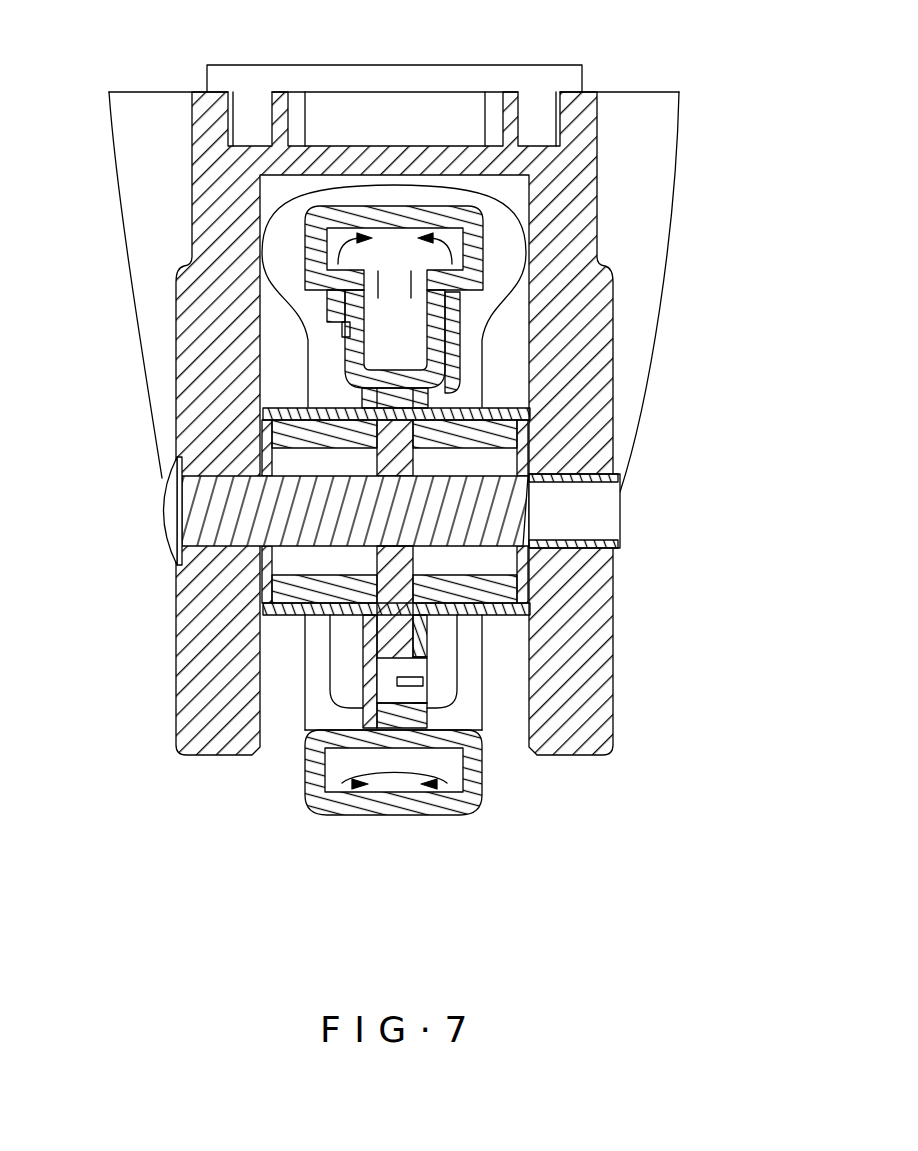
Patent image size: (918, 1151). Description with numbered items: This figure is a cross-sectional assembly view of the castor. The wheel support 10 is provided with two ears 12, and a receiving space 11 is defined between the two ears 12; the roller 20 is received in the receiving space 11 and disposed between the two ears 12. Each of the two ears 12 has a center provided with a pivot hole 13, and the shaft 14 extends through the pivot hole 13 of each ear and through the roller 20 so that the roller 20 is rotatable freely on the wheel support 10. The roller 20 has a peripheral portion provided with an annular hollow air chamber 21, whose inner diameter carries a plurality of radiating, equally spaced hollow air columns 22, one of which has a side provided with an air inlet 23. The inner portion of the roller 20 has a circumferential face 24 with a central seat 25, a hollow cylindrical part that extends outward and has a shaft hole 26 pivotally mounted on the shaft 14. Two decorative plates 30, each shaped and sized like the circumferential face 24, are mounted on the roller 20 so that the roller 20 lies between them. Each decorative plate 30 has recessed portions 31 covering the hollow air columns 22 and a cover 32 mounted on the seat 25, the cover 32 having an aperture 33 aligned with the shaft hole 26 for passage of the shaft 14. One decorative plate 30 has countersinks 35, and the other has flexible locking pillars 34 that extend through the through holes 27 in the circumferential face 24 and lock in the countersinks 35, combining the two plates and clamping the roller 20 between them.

The wheel support 10 is at (652, 136).
The receiving space 11 is at (335, 195).
The ears 12 is at (218, 740).
The pivot hole 13 is at (585, 472).
The shaft 14 is at (160, 518).
The roller 20 is at (292, 799).
The hollow air chamber 21 is at (395, 240).
The hollow air columns 22 is at (413, 310).
The air inlet 23 is at (357, 325).
The circumferential face 24 is at (383, 717).
The seat 25 is at (270, 415).
The shaft hole 26 is at (400, 465).
The through holes 27 is at (388, 653).
The decorative plates 30 is at (363, 672).
The recessed portions 31 is at (453, 348).
The cover 32 is at (360, 610).
The aperture 33 is at (270, 465).
The flexible locking pillars 34 is at (423, 705).
The countersinks 35 is at (420, 653).